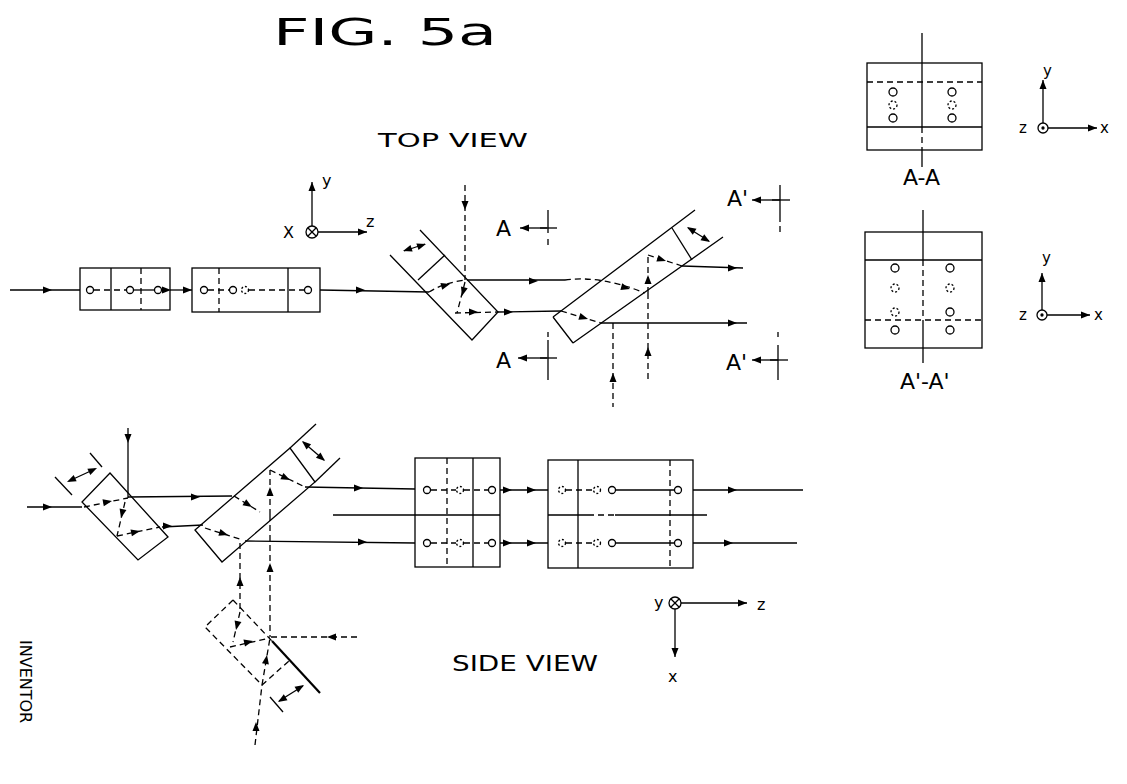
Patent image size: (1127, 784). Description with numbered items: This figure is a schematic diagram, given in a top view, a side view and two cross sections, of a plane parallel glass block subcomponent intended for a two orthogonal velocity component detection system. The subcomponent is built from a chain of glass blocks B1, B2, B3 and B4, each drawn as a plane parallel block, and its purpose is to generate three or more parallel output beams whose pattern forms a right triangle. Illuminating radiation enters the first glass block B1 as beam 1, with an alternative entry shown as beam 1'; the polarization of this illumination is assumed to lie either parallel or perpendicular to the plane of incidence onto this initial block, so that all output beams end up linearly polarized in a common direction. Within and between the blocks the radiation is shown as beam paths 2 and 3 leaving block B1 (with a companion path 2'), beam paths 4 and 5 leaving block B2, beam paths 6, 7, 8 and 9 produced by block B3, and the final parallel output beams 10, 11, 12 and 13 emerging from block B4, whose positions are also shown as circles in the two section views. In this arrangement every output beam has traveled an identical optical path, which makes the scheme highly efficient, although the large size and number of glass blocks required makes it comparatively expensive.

The incident light beam 1 is at (46, 386).
The second incident light beam 1' is at (140, 455).
The light beam component 2 is at (180, 374).
The light beam component 2' is at (282, 576).
The light beam component 3 is at (211, 429).
The light beam component 4 is at (609, 295).
The light beam component 5 is at (606, 322).
The light beam component 6 is at (706, 302).
The light beam component 7 is at (690, 289).
The light beam component 8 is at (734, 329).
The light beam component 9 is at (747, 316).
The output light beam component 10 is at (761, 398).
The output light beam component 11 is at (783, 310).
The output light beam component 12 is at (835, 435).
The output light beam component 13 is at (961, 268).
The first birefringent block B1 is at (115, 310).
The second birefringent block B2 is at (265, 312).
The third birefringent block B3 is at (466, 341).
The fourth birefringent block B4 is at (598, 331).